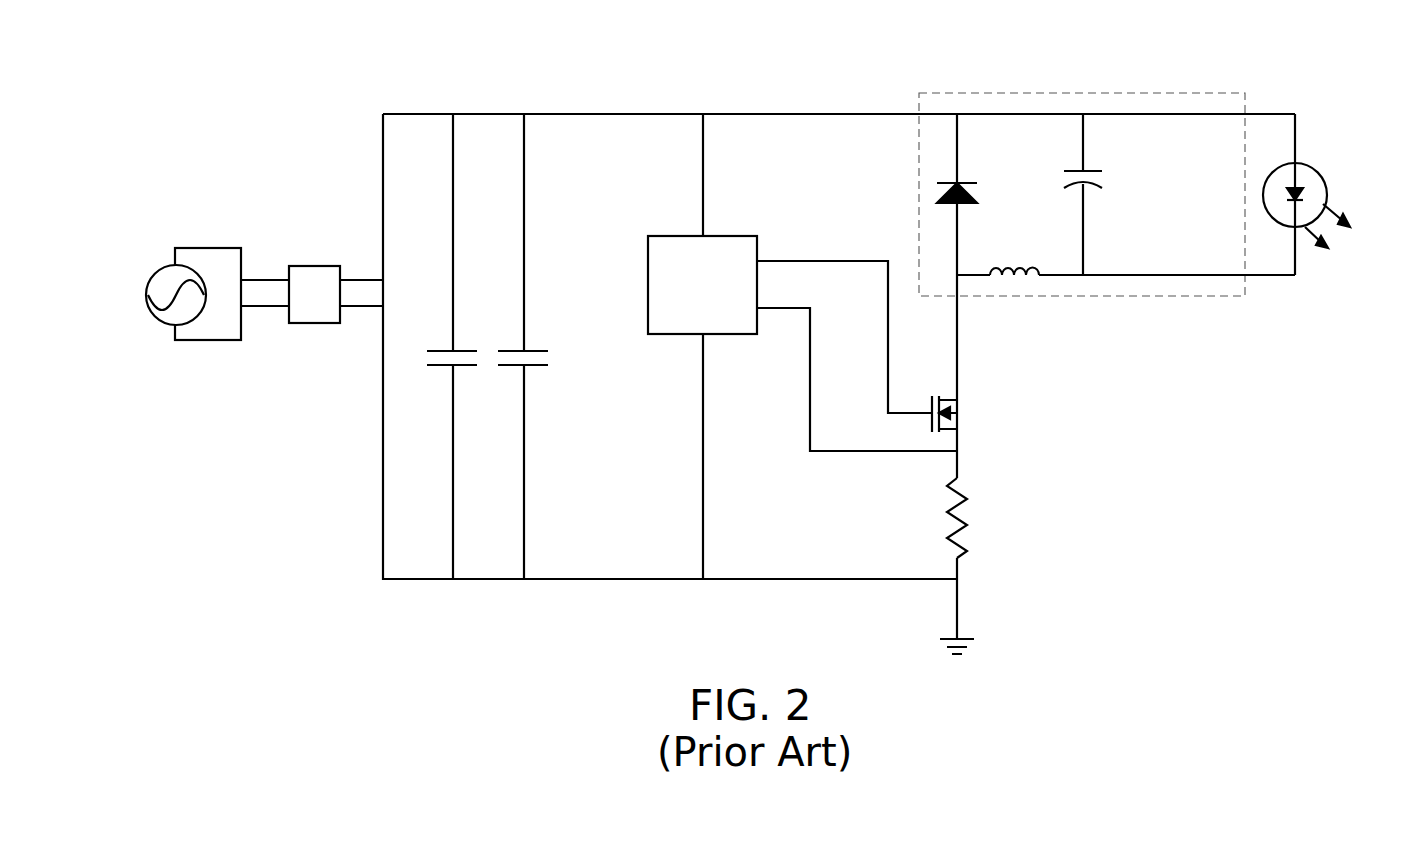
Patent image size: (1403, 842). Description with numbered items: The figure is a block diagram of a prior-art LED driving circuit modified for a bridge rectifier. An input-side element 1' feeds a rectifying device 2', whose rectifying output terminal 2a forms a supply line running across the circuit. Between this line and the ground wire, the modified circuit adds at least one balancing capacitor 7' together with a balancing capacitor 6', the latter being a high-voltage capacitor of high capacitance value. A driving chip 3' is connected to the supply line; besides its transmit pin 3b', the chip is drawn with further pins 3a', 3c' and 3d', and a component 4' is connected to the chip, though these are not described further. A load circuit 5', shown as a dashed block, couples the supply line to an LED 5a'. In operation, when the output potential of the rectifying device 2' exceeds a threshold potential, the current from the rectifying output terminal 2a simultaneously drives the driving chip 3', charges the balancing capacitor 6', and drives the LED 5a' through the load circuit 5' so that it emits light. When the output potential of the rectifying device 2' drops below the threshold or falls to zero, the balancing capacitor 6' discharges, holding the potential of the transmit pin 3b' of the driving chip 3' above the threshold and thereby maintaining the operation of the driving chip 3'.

The AC power source 1' is at (200, 273).
The rectifying device 2' is at (309, 251).
The rectifying output terminal 2a is at (383, 113).
The driving chip 3' is at (681, 346).
The power input terminal 3a' is at (744, 175).
The transmit pin 3b' is at (844, 307).
The ground terminal 3c' is at (743, 456).
The current sense input 3d' is at (857, 379).
The switching transistor 4' is at (989, 378).
The load circuit 5' is at (1107, 171).
The LED 5a' is at (1333, 194).
The balancing capacitor 6' is at (517, 346).
The balancing capacitor 7' is at (562, 346).